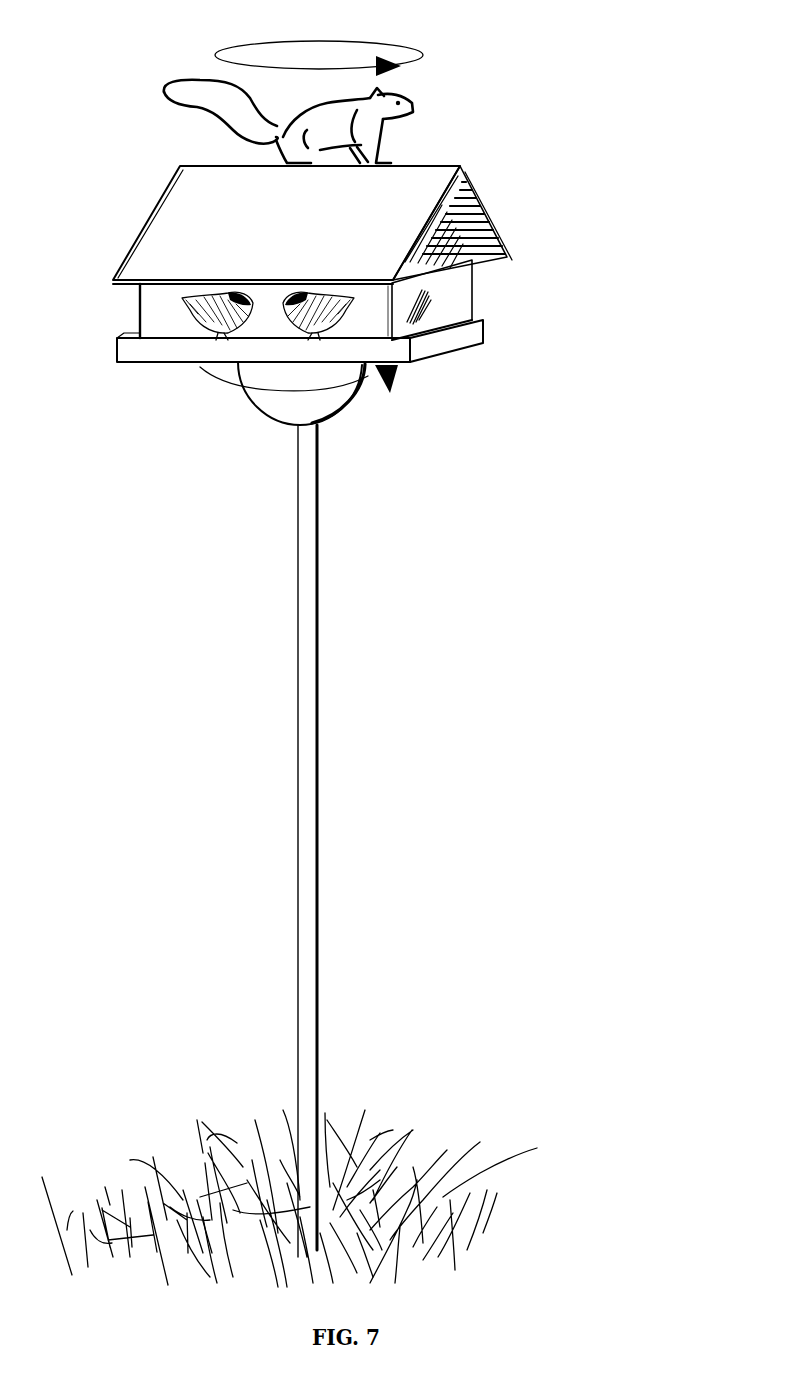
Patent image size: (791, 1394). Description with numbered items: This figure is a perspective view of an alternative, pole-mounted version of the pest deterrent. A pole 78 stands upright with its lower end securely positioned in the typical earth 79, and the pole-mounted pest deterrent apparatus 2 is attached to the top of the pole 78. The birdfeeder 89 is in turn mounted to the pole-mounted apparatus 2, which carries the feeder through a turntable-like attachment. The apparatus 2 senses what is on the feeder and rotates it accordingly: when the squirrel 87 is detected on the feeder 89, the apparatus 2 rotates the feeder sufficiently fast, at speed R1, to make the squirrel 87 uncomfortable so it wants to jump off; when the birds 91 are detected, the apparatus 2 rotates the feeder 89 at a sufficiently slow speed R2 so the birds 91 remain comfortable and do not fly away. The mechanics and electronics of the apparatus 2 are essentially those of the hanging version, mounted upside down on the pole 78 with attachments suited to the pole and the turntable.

The pole-mounted pest deterrent apparatus 2 is at (265, 414).
The pole 78 is at (322, 518).
The earth 79 is at (387, 1120).
The squirrel 87 is at (167, 62).
The birdfeeder 89 is at (510, 213).
The birds 91 is at (171, 305).
The sufficiently fast rotation speed R1 is at (423, 53).
The sufficiently slow rotation speed R2 is at (398, 378).